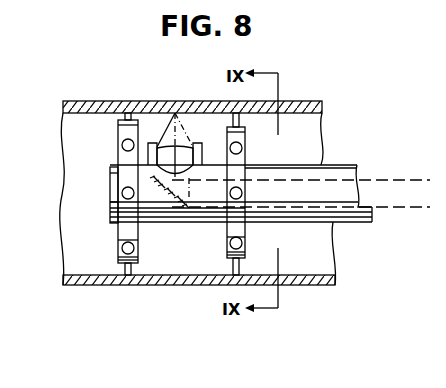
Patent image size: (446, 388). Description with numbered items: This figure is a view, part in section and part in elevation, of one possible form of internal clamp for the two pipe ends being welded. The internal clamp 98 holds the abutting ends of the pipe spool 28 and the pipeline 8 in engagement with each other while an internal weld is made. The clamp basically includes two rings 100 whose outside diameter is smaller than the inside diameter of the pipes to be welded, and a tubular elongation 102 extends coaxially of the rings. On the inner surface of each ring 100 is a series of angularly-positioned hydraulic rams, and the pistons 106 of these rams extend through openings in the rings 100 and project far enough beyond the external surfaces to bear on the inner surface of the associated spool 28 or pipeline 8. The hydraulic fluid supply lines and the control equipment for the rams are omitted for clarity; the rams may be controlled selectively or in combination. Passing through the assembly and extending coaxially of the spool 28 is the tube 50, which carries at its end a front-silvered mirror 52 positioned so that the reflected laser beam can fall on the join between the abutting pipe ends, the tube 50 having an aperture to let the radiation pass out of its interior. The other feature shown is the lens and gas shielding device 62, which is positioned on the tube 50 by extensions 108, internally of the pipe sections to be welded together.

The pipeline 8 is at (85, 101).
The spool 28 is at (297, 102).
The tube 50 is at (345, 172).
The front-silvered mirror 52 is at (185, 210).
The lens and gas shielding device 62 is at (178, 140).
The internal clamp 98 is at (131, 132).
The rings 100 is at (177, 113).
The tubular elongation 102 is at (160, 212).
The pistons 106 is at (130, 270).
The extensions 108 is at (154, 142).